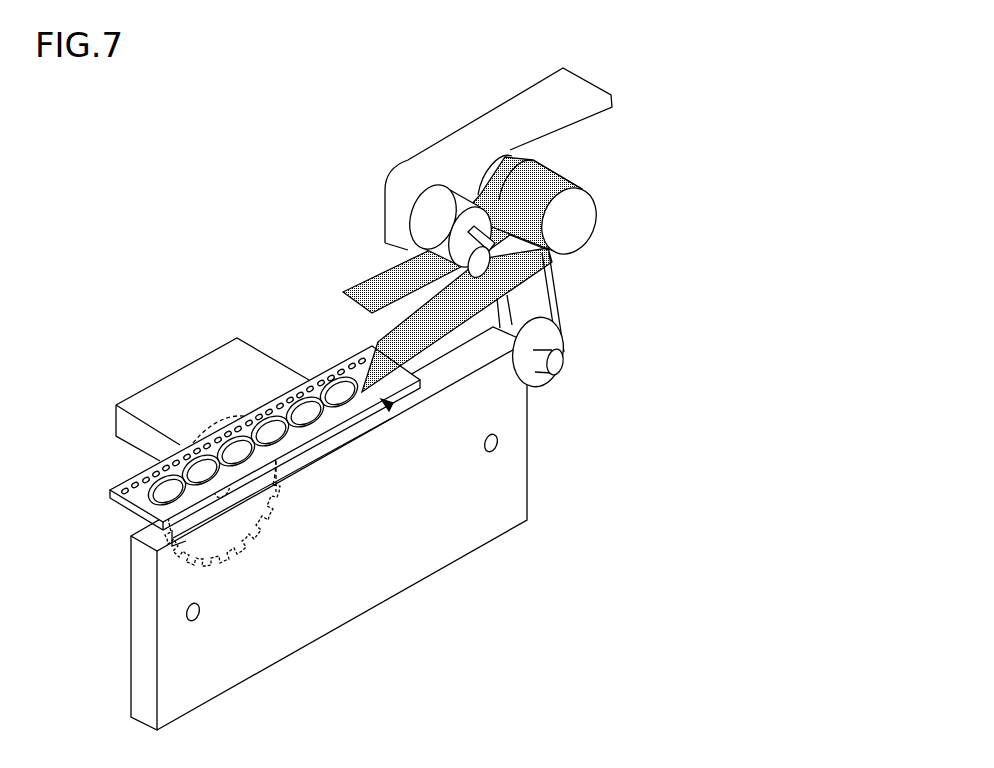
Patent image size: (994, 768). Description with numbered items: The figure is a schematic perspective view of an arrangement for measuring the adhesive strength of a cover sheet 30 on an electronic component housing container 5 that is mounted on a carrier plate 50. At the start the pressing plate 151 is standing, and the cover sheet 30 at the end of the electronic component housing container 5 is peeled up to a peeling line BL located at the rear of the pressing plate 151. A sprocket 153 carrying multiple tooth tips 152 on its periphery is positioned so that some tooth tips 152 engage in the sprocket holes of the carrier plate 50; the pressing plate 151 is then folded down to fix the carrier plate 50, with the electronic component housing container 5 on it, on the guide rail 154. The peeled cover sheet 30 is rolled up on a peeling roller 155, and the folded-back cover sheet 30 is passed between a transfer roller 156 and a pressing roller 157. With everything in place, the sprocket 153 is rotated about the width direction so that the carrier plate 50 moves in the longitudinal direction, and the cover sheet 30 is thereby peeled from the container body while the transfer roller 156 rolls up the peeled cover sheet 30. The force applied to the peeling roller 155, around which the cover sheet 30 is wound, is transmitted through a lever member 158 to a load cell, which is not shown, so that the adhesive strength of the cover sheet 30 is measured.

The electronic component housing container 5 is at (192, 377).
The cover sheet 30 is at (368, 296).
The carrier plate 50 is at (112, 489).
The pressing plate 151 is at (210, 368).
The tooth tips 152 is at (260, 533).
The sprocket 153 is at (220, 540).
The guide rail 154 is at (510, 463).
The peeling roller 155 is at (578, 216).
The transfer roller 156 is at (487, 263).
The pressing roller 157 is at (498, 159).
The lever member 158 is at (552, 308).
The peeling line BL is at (387, 404).